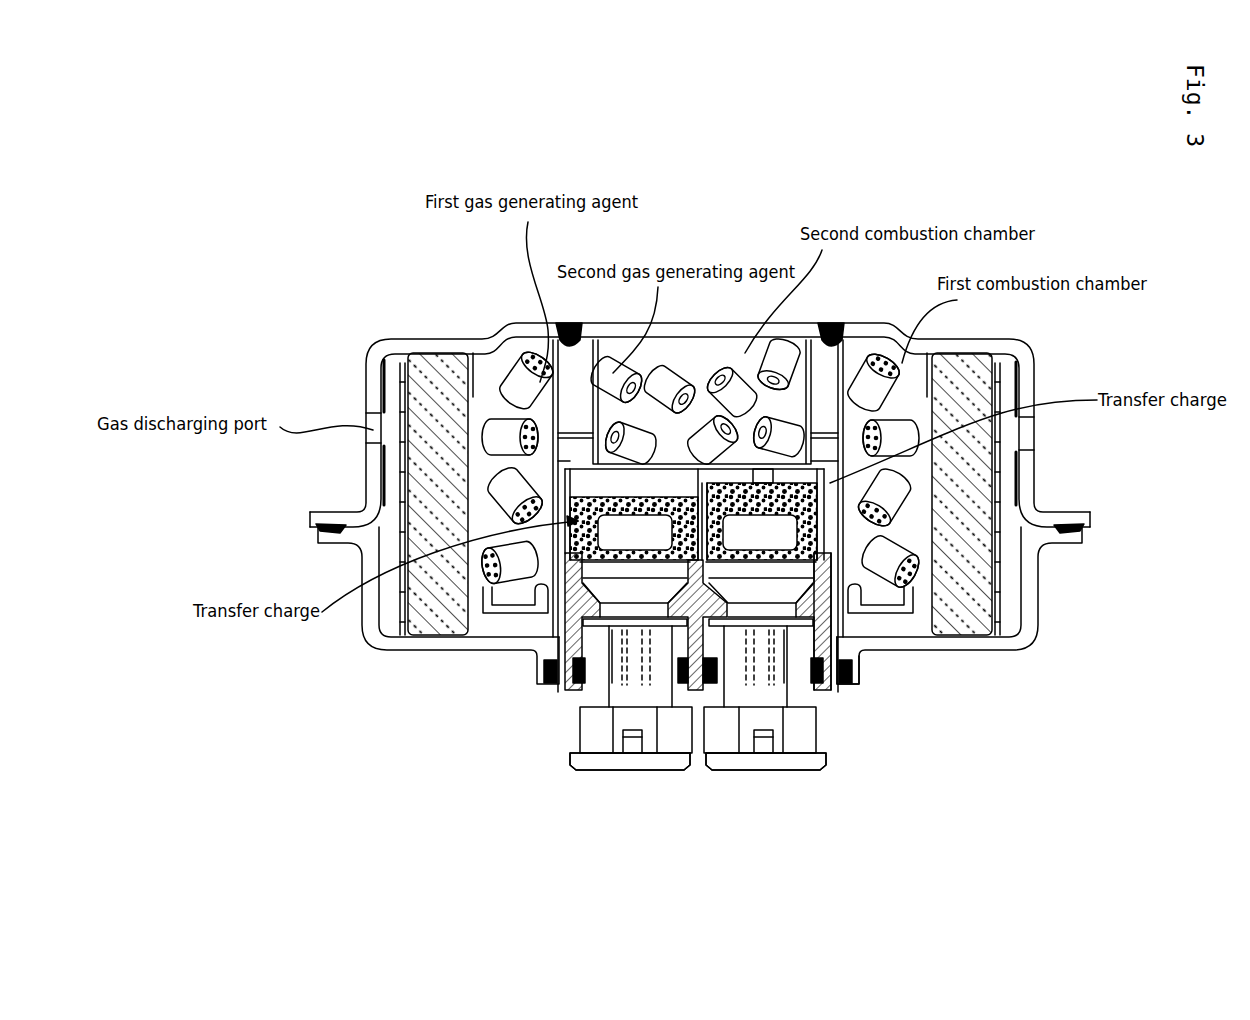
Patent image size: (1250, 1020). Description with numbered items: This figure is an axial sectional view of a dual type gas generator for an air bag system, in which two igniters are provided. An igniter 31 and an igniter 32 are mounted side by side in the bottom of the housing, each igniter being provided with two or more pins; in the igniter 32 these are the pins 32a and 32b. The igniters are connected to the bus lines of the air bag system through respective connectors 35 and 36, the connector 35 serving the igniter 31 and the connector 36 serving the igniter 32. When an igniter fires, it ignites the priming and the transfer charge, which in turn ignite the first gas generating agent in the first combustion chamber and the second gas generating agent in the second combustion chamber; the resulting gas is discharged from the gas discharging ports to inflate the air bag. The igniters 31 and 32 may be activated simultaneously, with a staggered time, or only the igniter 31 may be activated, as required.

The igniter 31 is at (613, 572).
The igniter 32 is at (846, 648).
The pin 32a is at (583, 770).
The pin 32b is at (671, 717).
The connector 35 is at (626, 770).
The connector 36 is at (759, 770).